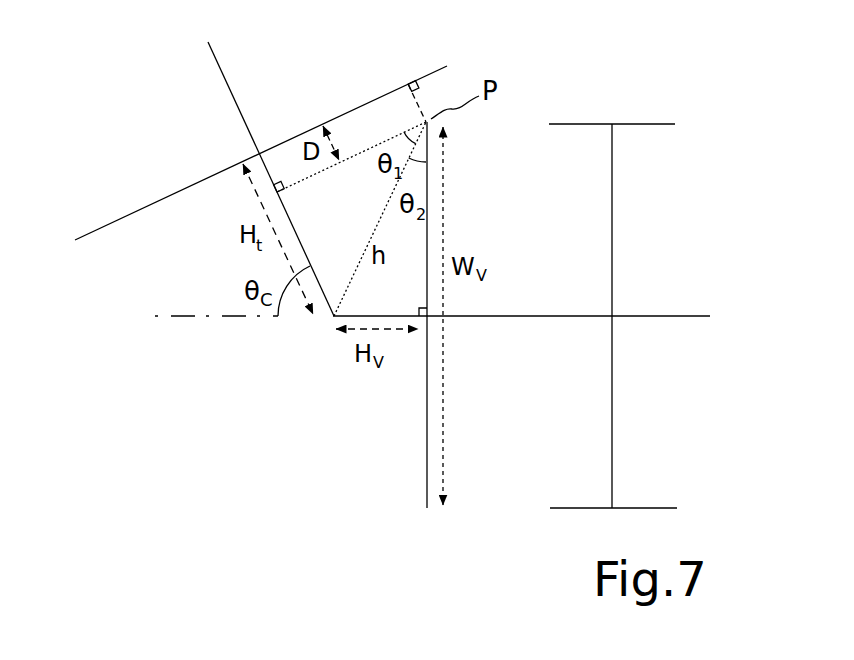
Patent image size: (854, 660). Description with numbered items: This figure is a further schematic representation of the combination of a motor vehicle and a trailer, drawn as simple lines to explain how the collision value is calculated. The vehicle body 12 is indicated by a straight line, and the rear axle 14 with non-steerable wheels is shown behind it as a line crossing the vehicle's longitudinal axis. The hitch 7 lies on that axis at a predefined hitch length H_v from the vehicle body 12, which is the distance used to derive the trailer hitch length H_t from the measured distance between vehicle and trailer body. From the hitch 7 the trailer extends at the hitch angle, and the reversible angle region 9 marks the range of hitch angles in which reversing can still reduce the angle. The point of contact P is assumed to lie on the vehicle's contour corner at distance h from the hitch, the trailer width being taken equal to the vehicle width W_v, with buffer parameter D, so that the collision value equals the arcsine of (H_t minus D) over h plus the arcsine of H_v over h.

The hitch 7 is at (334, 317).
The reversible angle region 9 is at (105, 227).
The vehicle body 12 is at (427, 445).
The rear axle 14 is at (655, 262).